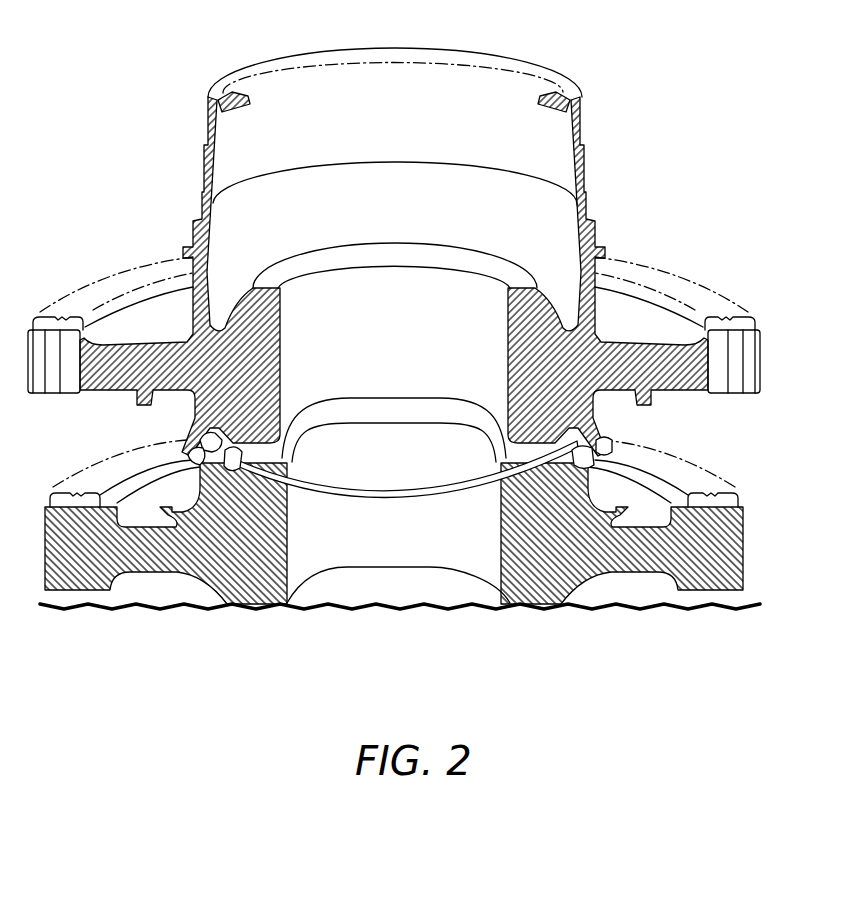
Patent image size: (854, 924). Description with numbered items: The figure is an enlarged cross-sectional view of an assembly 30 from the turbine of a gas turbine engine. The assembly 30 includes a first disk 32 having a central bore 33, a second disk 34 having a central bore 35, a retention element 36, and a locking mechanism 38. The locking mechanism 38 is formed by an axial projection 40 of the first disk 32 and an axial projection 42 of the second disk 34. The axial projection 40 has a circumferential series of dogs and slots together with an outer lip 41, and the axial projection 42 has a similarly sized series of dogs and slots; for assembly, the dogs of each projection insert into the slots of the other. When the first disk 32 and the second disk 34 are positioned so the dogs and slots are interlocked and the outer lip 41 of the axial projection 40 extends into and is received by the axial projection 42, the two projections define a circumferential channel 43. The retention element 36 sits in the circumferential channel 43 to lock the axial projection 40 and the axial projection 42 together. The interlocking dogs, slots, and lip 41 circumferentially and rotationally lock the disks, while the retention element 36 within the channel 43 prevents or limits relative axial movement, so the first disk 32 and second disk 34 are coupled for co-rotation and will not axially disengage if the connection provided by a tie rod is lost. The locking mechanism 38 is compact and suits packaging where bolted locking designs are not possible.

The assembly 30 is at (127, 178).
The first disk 32 is at (643, 357).
The central bore 33 is at (414, 288).
The second disk 34 is at (638, 560).
The central bore 35 is at (358, 566).
The retention element 36 is at (403, 497).
The locking mechanism 38 is at (608, 448).
The axial projection 40 is at (198, 438).
The outer lip 41 is at (187, 456).
The axial projection 42 is at (607, 465).
The circumferential channel 43 is at (237, 452).